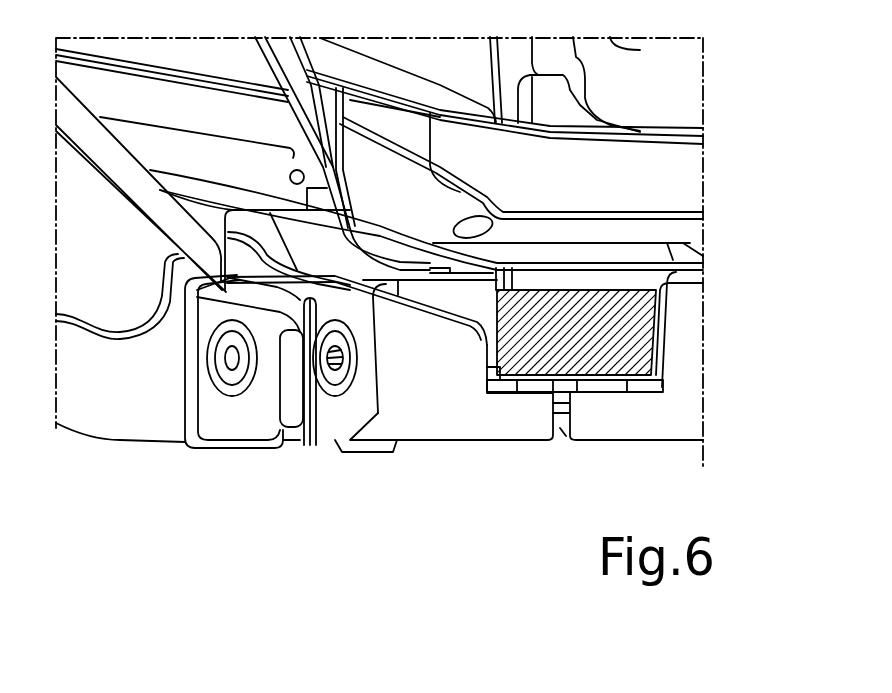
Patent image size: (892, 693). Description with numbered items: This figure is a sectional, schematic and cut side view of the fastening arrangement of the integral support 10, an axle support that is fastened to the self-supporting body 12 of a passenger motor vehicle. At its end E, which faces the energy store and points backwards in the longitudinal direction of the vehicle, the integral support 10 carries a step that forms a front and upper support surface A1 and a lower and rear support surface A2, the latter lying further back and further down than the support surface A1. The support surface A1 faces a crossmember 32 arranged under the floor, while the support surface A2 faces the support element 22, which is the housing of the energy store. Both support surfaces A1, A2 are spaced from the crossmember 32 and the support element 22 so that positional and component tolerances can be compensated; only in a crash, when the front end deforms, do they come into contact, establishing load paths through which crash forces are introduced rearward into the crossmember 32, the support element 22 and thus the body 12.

The integral support 10 is at (306, 440).
The self-supporting body 12 is at (672, 113).
The support element 22 is at (644, 443).
The crossmember 32 is at (620, 353).
The front and upper support surface A1 is at (507, 342).
The lower and rear support surface A2 is at (570, 428).
The end of the integral support E is at (526, 460).